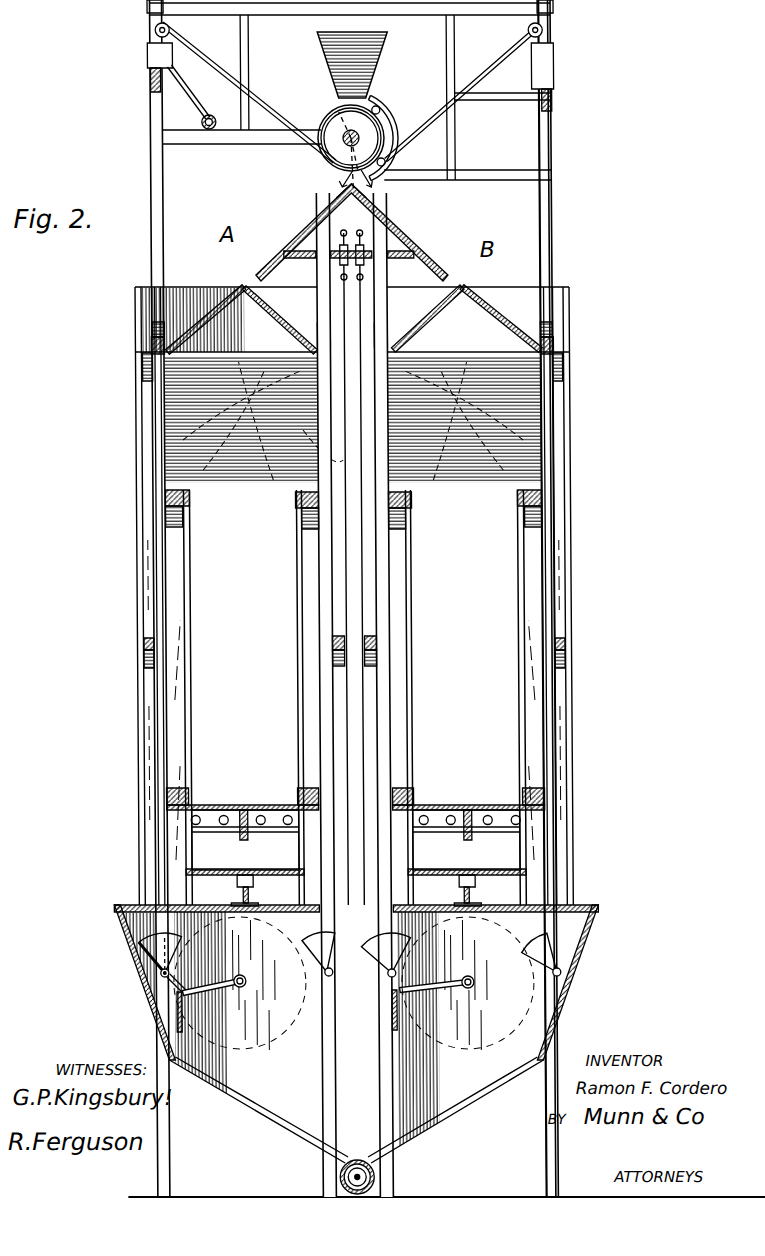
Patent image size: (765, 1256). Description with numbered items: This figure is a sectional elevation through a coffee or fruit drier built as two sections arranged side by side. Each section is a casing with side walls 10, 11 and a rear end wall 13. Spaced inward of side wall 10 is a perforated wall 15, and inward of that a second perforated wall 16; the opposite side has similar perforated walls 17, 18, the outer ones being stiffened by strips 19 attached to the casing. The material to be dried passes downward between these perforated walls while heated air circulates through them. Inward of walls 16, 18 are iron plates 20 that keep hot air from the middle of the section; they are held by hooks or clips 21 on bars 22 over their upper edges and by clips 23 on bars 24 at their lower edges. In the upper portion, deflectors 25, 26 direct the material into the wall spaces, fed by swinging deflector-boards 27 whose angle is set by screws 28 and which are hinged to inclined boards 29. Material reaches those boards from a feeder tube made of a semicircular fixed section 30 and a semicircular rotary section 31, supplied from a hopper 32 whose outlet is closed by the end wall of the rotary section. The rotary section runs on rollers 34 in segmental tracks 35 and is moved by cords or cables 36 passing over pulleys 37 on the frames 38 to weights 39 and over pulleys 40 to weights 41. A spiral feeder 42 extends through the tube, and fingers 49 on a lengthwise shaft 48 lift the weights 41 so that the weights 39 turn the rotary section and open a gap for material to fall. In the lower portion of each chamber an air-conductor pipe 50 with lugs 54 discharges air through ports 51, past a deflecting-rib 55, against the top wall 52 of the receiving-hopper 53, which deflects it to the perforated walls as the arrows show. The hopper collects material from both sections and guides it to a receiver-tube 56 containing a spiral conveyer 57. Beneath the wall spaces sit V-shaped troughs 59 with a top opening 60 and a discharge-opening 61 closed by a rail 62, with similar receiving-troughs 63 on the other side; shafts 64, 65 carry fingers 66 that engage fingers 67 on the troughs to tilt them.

The side wall 10 is at (134, 602).
The side wall 11 is at (338, 606).
The end wall 13 is at (200, 287).
The perforated wall 15 is at (148, 576).
The perforated wall 16 is at (165, 578).
The perforated wall 17 is at (326, 594).
The perforated wall 18 is at (313, 572).
The strips 19 is at (138, 645).
The plates 20 is at (187, 703).
The hooks or clips 21 is at (187, 496).
The bars 22 is at (180, 516).
The clips 23 is at (180, 790).
The bars 24 is at (186, 772).
The deflector 25 is at (222, 291).
The deflector 26 is at (262, 306).
The swinging deflector-boards 27 is at (298, 235).
The screws 28 is at (312, 259).
The inclined boards 29 is at (339, 197).
The semicircular fixed section 30 is at (321, 158).
The semicircular rotary section 31 is at (396, 142).
The hopper 32 is at (372, 78).
The rollers 34 is at (390, 117).
The segmental tracks 35 is at (395, 106).
The cords or cables 36 is at (487, 71).
The pulleys 37 is at (543, 28).
The frames 38 is at (551, 119).
The weights 39 is at (553, 71).
The pulleys 40 is at (154, 31).
The weights 41 is at (160, 54).
The spiral feeder 42 is at (337, 122).
The shaft 48 is at (212, 116).
The fingers 49 is at (191, 100).
The air-conductor pipe 50 is at (356, 840).
The openings or ports 51 is at (248, 883).
The top wall 52 is at (288, 913).
The receiving-hopper 53 is at (357, 1034).
The lugs or projections 54 is at (238, 811).
The deflecting-rib 55 is at (236, 894).
The receiver-tube 56 is at (368, 1175).
The spiral conveyer 57 is at (343, 1177).
The troughs 59 is at (138, 951).
The opening 60 is at (176, 938).
The discharge-opening 61 is at (153, 974).
The rail or bar 62 is at (165, 986).
The receiving-troughs 63 is at (310, 959).
The shaft 64 is at (240, 987).
The shaft 65 is at (467, 980).
The fingers 66 is at (214, 990).
The fingers 67 is at (168, 1020).